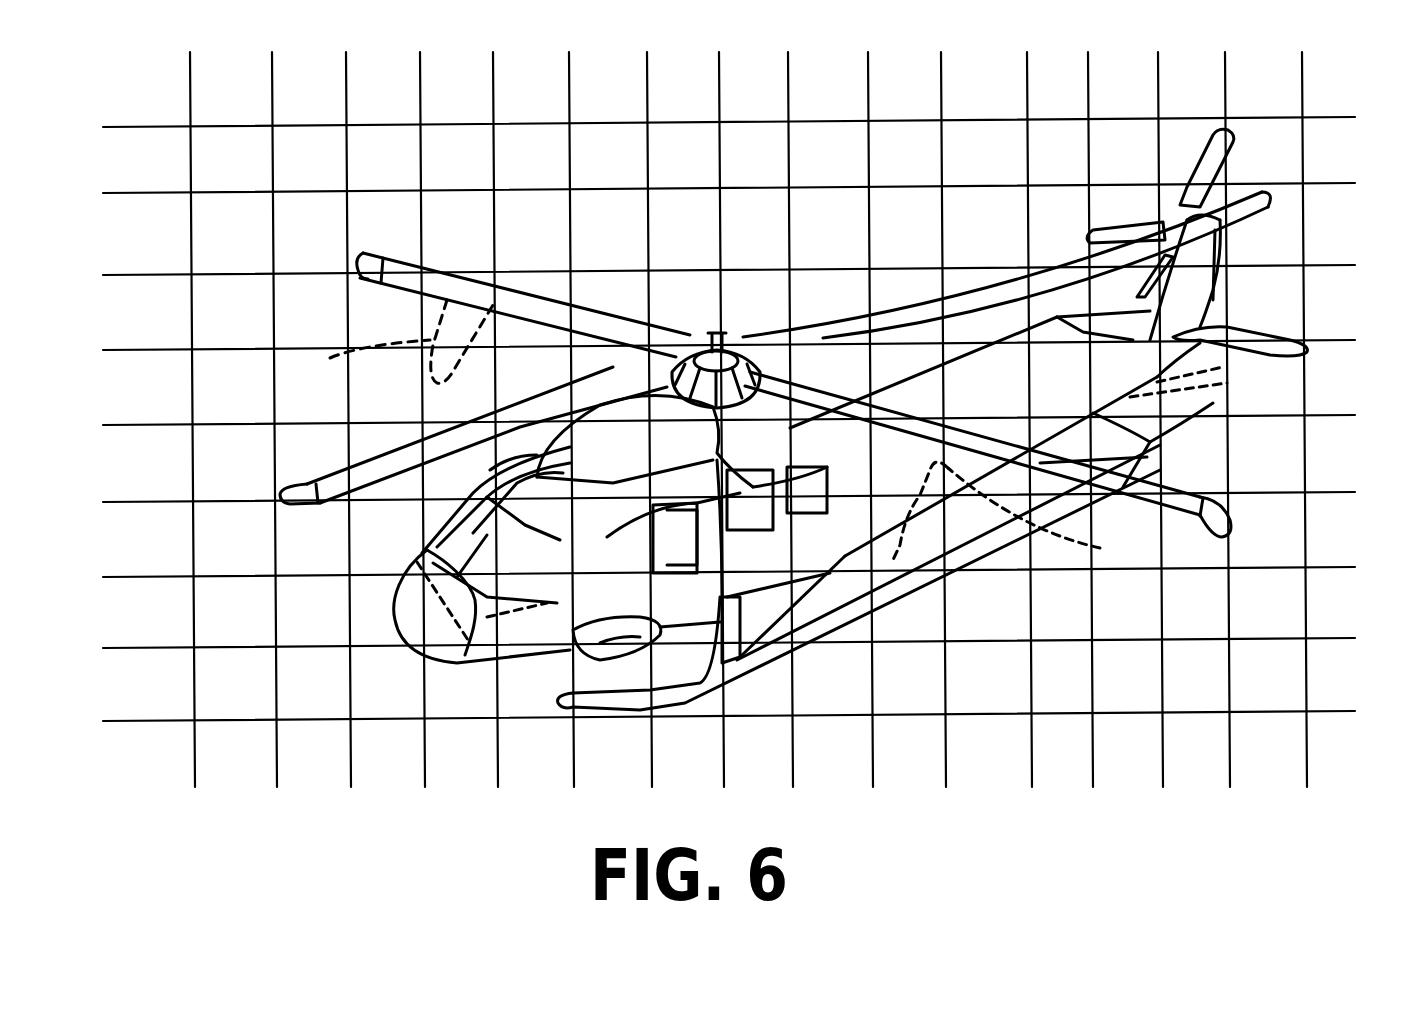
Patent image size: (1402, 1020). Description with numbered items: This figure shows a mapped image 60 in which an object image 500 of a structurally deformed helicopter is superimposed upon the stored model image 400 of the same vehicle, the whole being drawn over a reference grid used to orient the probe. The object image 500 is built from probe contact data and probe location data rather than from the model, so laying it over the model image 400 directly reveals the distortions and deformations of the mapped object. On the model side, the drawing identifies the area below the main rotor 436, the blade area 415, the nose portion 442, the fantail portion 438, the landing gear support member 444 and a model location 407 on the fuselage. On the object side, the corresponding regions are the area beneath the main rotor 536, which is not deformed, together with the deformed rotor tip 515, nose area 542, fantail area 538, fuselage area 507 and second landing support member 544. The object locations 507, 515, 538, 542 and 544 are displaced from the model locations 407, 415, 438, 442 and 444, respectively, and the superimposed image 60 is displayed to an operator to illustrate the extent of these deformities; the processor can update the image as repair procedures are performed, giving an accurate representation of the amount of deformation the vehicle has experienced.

The mapped image 60 is at (1069, 101).
The model image 400 is at (827, 419).
The blade area 415 is at (383, 255).
The area below the main rotor 436 is at (828, 319).
The area beneath the main rotor 536 is at (763, 333).
The rotor tip 515 is at (389, 347).
The nose portion 442 is at (392, 618).
The nose area 542 is at (432, 600).
The fantail portion 438 is at (1222, 257).
The fantail area 538 is at (1227, 291).
The second landing support member 544 is at (1227, 383).
The landing gear support member 444 is at (1163, 460).
The model location 407 is at (940, 460).
The object image 500 is at (862, 530).
The fuselage area 507 is at (1024, 512).